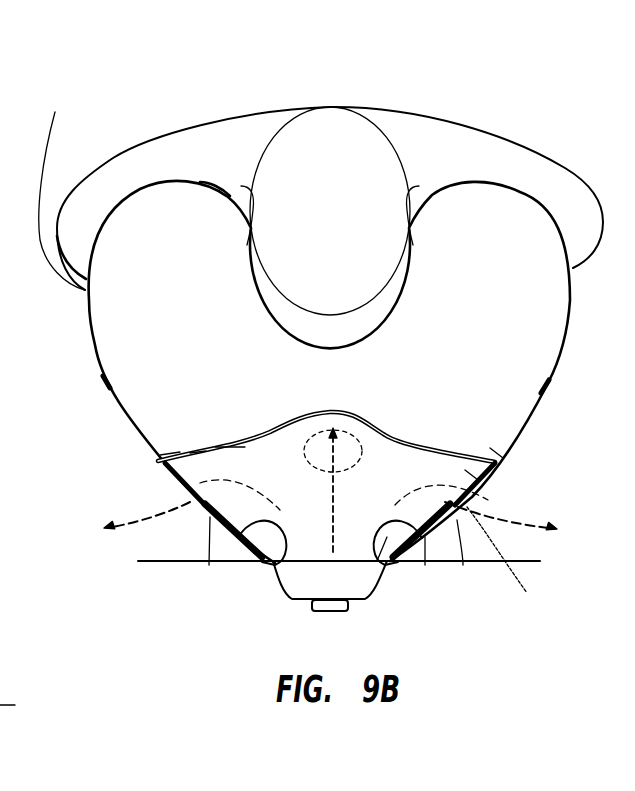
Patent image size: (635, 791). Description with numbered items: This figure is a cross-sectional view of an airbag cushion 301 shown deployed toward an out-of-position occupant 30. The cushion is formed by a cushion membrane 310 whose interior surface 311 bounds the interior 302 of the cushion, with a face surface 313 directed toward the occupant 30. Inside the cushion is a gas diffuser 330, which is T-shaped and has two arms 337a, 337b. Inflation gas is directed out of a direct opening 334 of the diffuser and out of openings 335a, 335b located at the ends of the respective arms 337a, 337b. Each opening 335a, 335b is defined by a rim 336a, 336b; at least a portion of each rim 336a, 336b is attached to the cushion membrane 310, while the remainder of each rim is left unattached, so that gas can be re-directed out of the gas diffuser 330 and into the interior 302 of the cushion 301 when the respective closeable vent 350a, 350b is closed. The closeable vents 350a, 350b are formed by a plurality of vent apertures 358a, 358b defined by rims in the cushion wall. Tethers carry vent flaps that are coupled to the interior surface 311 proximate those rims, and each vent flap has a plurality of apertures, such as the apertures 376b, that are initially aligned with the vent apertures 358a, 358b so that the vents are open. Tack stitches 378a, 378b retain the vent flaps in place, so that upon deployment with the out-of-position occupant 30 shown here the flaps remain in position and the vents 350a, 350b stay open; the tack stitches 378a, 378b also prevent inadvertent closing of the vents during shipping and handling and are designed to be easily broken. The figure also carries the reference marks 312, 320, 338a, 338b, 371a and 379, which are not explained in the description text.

The occupant 30 is at (344, 207).
The airbag cushion 301 is at (86, 334).
The interior of the inflatable airbag cushion 302 is at (192, 290).
The cushion membrane 310 is at (62, 188).
The interior surface 311 is at (393, 565).
The shell edge 312 is at (57, 232).
The face surface 313 is at (215, 186).
The chin cup 320 is at (346, 597).
The gas diffuser 330 is at (277, 560).
The direct opening 334 is at (336, 432).
The opening 335a is at (472, 475).
The opening 335b is at (197, 453).
The rim 336a is at (497, 453).
The rim 336b is at (171, 455).
The arm 337a is at (400, 437).
The arm 337b is at (230, 447).
The attachment region 338a is at (503, 465).
The attachment region 338b is at (158, 462).
The closeable vent 350a is at (488, 516).
The closeable vent 350b is at (185, 513).
The vent apertures 358a is at (527, 593).
The vent apertures 358b is at (197, 515).
The strap segment 371a is at (425, 565).
The apertures 376b is at (180, 502).
The tack stitches 378a is at (463, 565).
The tack stitches 378b is at (209, 565).
The attachment point 379 is at (103, 380).